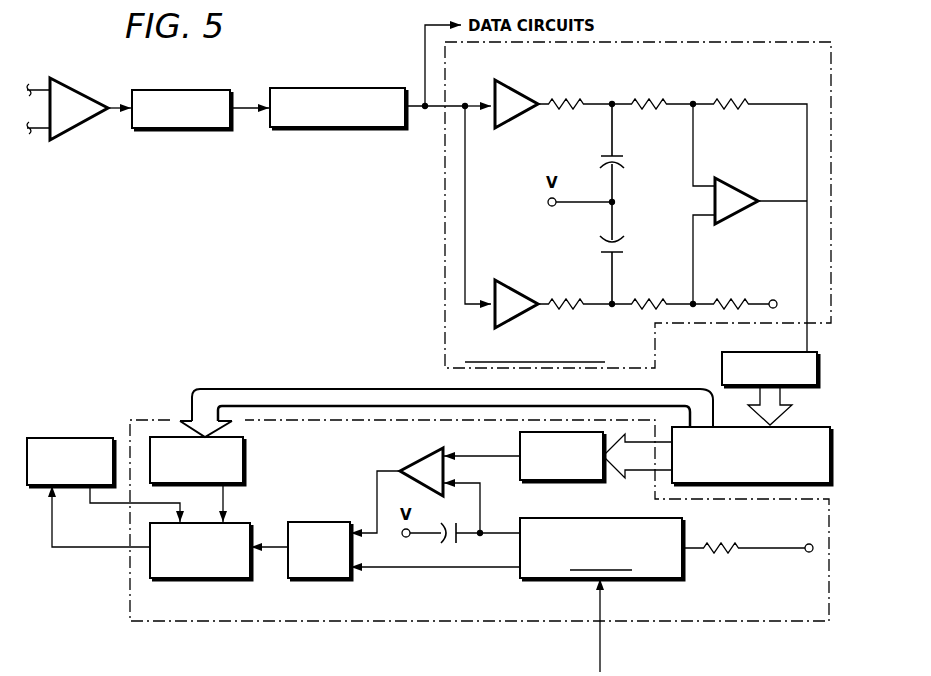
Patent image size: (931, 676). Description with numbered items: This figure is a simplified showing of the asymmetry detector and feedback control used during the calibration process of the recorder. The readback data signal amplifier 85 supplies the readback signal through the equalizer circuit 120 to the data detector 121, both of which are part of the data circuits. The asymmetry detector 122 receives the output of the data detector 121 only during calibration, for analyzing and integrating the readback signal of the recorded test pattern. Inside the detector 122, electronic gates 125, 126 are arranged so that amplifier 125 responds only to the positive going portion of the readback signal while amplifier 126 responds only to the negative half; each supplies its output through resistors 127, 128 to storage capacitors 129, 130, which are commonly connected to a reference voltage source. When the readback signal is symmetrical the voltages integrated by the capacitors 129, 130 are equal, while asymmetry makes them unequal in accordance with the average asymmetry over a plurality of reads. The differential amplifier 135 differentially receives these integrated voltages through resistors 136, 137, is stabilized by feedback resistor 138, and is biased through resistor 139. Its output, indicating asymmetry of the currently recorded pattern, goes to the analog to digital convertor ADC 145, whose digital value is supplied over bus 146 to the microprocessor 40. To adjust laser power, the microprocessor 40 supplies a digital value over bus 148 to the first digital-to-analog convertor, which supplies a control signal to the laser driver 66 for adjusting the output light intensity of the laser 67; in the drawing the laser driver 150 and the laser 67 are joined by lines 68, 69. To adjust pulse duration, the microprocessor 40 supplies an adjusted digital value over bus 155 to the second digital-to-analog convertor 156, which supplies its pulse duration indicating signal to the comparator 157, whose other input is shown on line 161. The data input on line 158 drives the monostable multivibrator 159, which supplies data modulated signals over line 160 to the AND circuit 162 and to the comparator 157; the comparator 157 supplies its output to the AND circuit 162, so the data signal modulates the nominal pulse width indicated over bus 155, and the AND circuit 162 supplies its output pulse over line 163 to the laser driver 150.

The readback data signal amplifier 85 is at (80, 94).
The equalizer circuit 120 is at (183, 90).
The data detector 121 is at (322, 88).
The asymmetry detector 122 is at (444, 297).
The electronic gate 125 is at (537, 70).
The electronic gate 126 is at (535, 270).
The resistor 127 is at (590, 72).
The resistor 128 is at (588, 270).
The storage capacitor 129 is at (602, 157).
The storage capacitor 130 is at (602, 254).
The differential amplifier 135 is at (733, 178).
The resistor 136 is at (654, 90).
The resistor 137 is at (685, 270).
The feedback resistor 138 is at (730, 88).
The resistor 139 is at (742, 270).
The analog to digital convertor ADC 145 is at (724, 352).
The bus 146 is at (782, 423).
The microprocessor 40 is at (728, 426).
The bus 148 is at (398, 388).
The laser driver 150 is at (244, 468).
The laser 67 is at (62, 420).
The laser drive line 68 is at (94, 550).
The laser feedback line 69 is at (110, 504).
The laser control 66 is at (432, 599).
The line 163 is at (276, 554).
The comparator 157 is at (420, 461).
The AND circuit 162 is at (332, 490).
The DAC2 156 is at (520, 448).
The bus 155 is at (632, 480).
The comparator reference input line 161 is at (480, 512).
The line 160 is at (479, 568).
The line 158 is at (604, 612).
The monostable multivibrator 159 is at (684, 568).